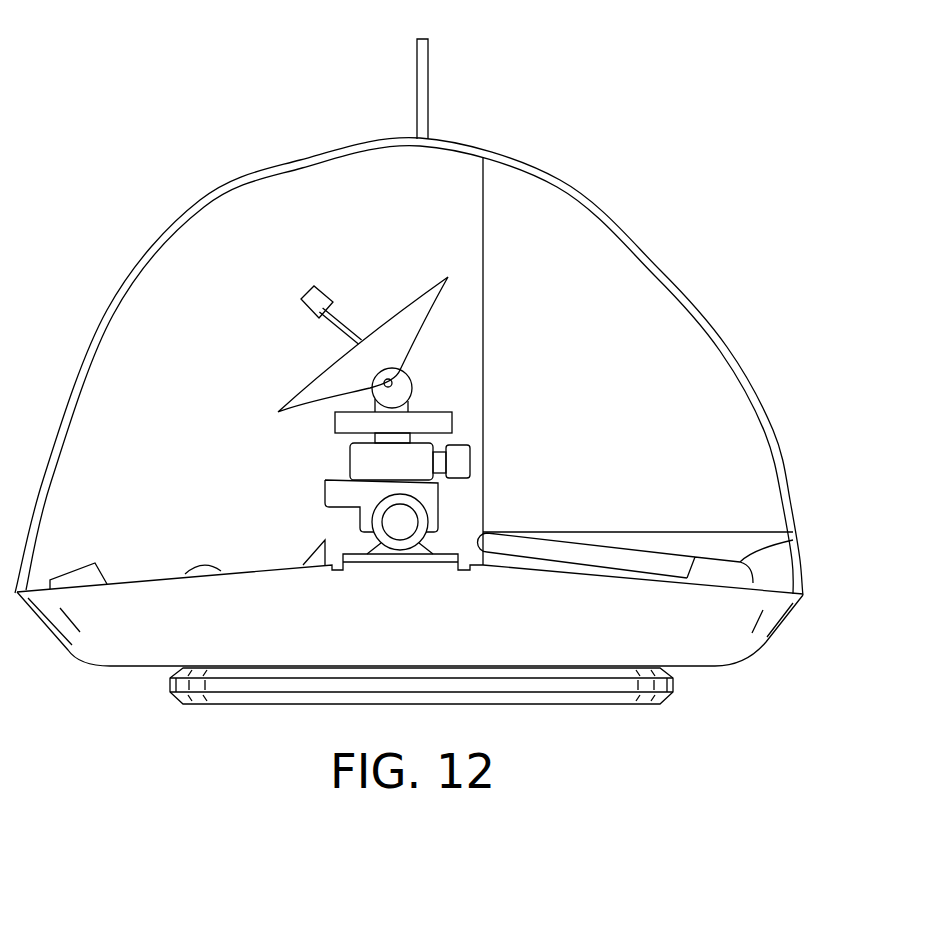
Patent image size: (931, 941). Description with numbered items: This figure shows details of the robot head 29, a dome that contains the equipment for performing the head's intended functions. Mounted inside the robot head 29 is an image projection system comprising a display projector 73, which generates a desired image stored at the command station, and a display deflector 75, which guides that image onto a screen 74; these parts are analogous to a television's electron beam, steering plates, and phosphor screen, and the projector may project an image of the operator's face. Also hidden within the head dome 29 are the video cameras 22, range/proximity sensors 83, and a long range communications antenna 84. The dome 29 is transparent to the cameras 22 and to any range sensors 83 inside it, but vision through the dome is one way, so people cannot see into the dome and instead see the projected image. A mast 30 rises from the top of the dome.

The robot head 29 is at (307, 130).
The mast 30 is at (430, 63).
The screen 74 is at (584, 187).
The range/proximity sensors 83 is at (335, 423).
The long range communications antenna 84 is at (305, 292).
The video cameras 22 is at (465, 447).
The display deflector 75 is at (492, 536).
The display projector 73 is at (796, 541).